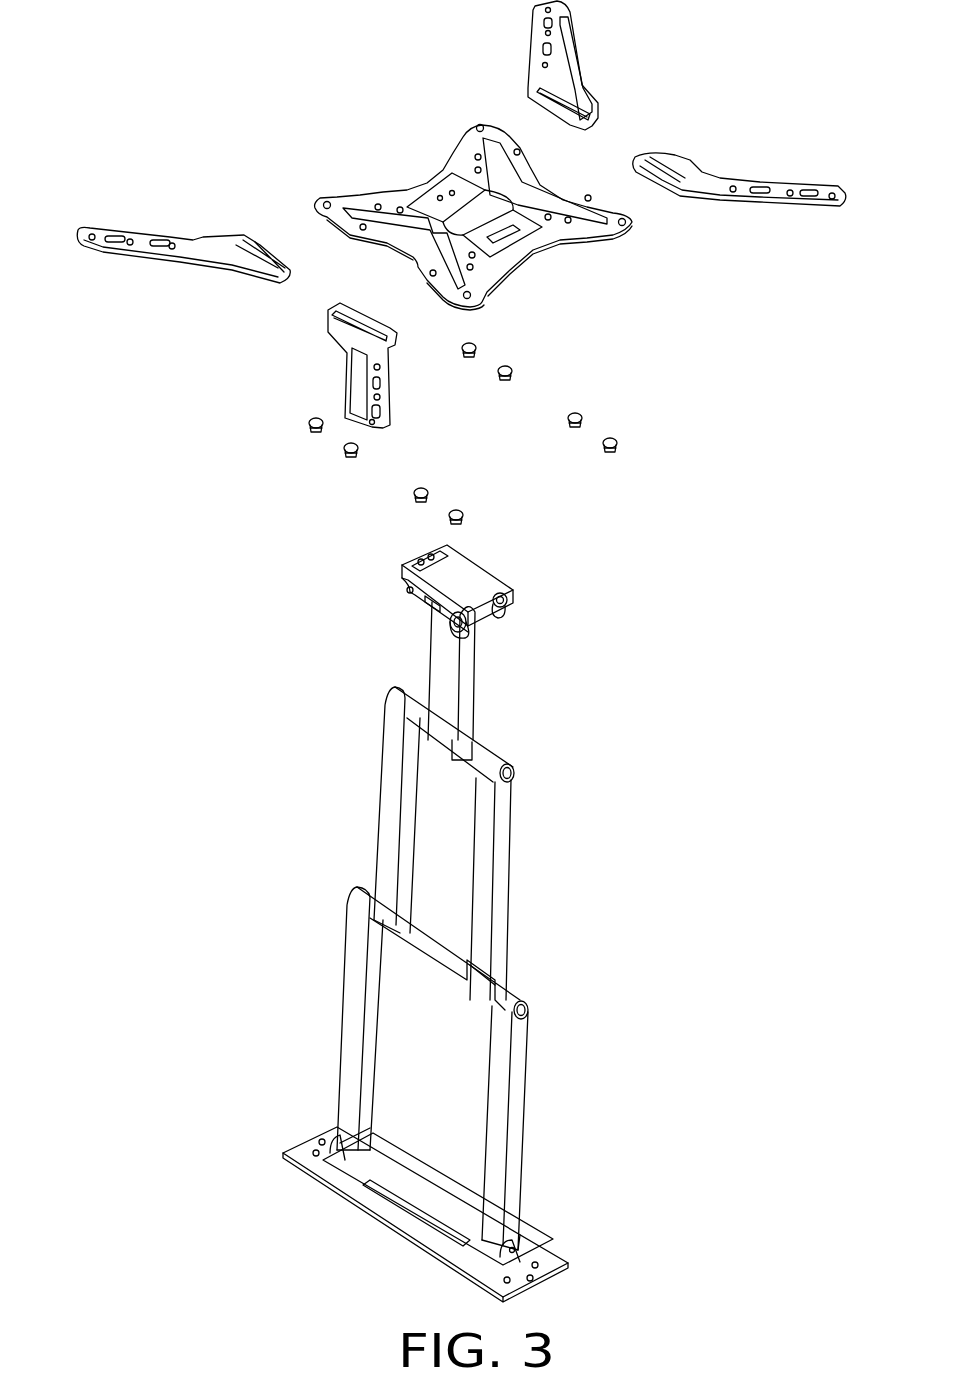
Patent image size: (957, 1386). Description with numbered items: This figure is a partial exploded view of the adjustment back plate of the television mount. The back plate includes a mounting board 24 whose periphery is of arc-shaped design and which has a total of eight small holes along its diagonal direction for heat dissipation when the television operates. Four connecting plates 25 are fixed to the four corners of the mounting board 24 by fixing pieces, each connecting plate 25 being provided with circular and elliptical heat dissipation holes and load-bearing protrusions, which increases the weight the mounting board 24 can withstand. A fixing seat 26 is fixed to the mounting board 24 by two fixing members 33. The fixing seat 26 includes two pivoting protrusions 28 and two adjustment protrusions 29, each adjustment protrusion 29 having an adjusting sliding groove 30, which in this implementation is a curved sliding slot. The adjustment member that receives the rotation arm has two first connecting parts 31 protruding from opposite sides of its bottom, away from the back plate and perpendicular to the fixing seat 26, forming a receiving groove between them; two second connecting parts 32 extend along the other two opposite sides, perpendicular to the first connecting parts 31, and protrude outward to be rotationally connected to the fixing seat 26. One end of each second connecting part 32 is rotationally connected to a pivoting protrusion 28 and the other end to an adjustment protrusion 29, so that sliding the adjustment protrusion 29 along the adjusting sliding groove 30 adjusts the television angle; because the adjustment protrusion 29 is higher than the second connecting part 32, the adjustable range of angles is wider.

The mounting board 24 is at (388, 195).
The connecting plate 25 is at (143, 228).
The fixing seat 26 is at (467, 578).
The pivoting protrusion 28 is at (406, 591).
The adjustment protrusion 29 is at (466, 635).
The adjusting sliding groove 30 is at (507, 605).
The first connecting part 31 is at (503, 611).
The second connecting part 32 is at (432, 600).
The fixing member 33 is at (422, 562).